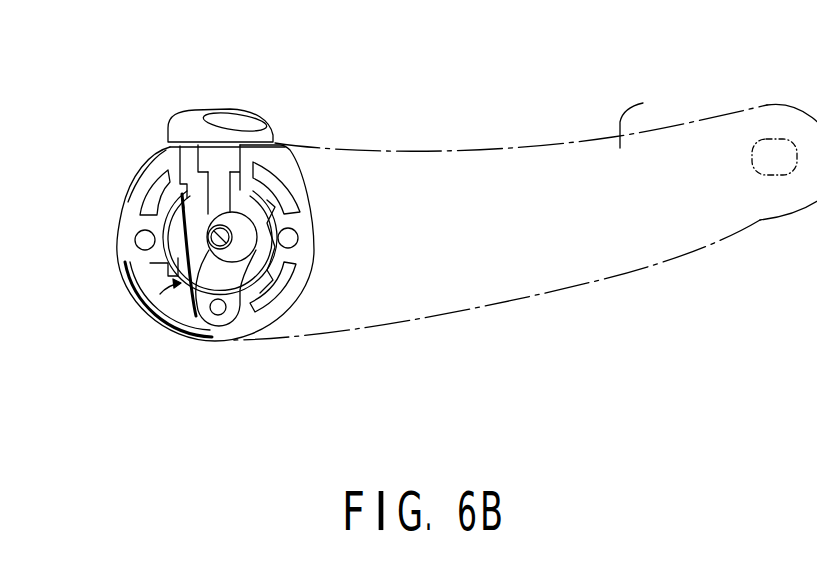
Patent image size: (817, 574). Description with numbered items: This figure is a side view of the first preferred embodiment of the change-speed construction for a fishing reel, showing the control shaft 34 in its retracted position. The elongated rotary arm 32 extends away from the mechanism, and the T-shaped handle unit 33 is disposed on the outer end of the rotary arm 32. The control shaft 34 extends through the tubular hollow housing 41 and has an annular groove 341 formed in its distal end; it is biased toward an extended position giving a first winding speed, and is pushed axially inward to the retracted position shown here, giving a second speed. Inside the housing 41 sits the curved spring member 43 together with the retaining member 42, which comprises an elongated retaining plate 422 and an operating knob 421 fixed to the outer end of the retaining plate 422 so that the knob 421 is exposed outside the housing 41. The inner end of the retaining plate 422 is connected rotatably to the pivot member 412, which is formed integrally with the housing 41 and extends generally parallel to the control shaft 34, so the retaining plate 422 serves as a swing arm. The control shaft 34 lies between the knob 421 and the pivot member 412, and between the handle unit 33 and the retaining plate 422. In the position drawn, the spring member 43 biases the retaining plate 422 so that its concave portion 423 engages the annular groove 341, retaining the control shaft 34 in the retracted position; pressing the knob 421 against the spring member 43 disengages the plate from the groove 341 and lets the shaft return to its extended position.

The rotary arm 32 is at (643, 103).
The handle unit 33 is at (773, 150).
The control shaft 34 is at (233, 213).
The annular groove 341 is at (258, 244).
The housing 41 is at (300, 285).
The pivot member 412 is at (221, 310).
The retaining member 42 is at (228, 107).
The operating knob 421 is at (257, 123).
The retaining plate 422 is at (208, 285).
The concave portion 423 is at (207, 240).
The spring member 43 is at (152, 296).